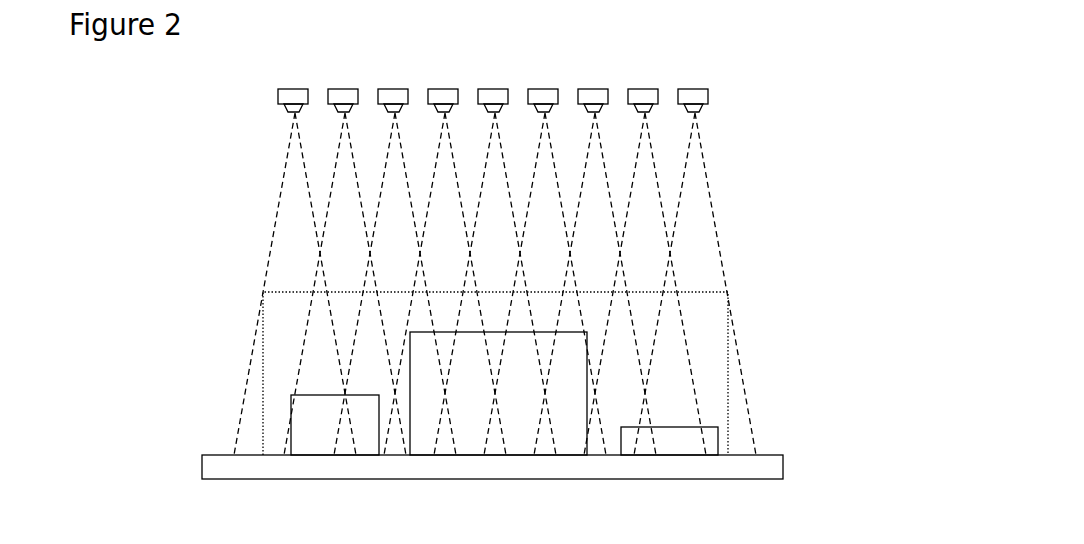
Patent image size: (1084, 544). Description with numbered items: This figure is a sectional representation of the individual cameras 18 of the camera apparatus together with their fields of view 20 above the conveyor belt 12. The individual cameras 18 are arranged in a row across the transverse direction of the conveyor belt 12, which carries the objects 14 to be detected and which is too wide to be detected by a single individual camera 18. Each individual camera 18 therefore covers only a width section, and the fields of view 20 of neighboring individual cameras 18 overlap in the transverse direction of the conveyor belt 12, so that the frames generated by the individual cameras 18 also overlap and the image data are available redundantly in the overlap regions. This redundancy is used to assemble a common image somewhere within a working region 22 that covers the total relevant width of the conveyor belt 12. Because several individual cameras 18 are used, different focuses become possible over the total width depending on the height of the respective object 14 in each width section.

The conveyor belt 12 is at (770, 466).
The object 14 is at (303, 418).
The individual camera 18 is at (499, 108).
The field of view 20 is at (274, 225).
The working region 22 is at (725, 368).